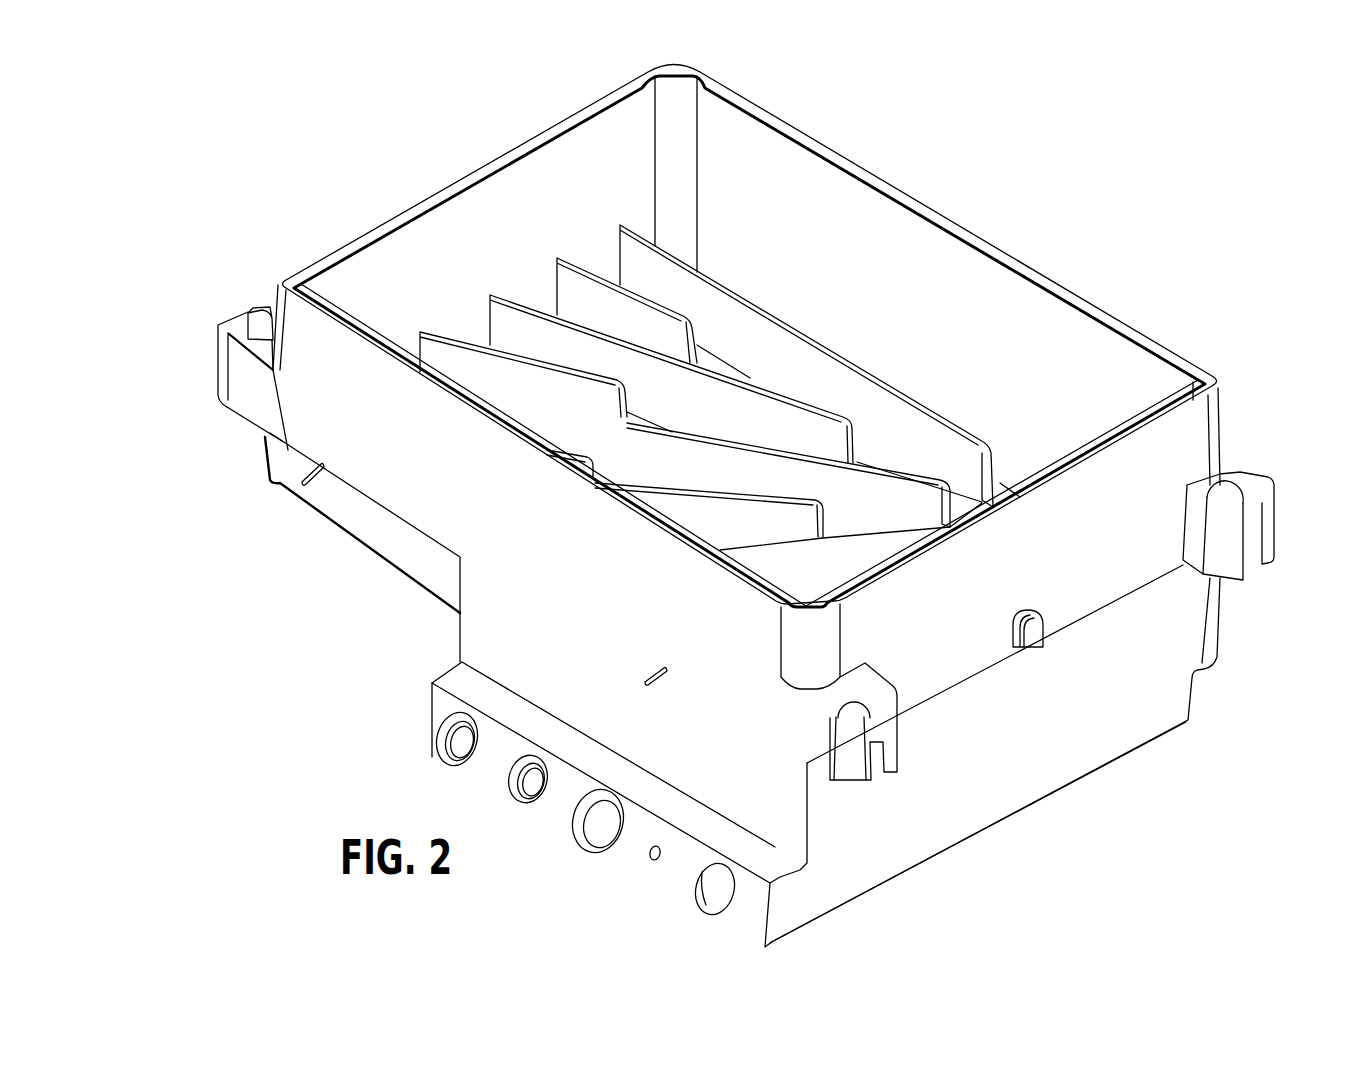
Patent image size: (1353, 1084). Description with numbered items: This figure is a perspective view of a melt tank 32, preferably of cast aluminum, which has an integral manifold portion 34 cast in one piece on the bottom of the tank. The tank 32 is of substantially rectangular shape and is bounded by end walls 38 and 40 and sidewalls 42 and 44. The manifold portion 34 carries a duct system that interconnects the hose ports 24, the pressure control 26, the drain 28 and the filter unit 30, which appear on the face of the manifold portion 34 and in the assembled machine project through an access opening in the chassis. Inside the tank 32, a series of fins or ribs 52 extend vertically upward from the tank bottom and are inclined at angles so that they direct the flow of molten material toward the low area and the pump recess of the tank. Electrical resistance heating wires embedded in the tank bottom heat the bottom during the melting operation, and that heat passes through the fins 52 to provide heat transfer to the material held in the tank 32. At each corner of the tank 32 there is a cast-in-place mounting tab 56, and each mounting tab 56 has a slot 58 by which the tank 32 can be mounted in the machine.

The hose ports 24 is at (523, 783).
The pressure control 26 is at (594, 826).
The drain 28 is at (650, 857).
The filter unit 30 is at (713, 893).
The melt tank 32 is at (1030, 259).
The manifold portion 34 is at (813, 892).
The end wall 38 is at (453, 203).
The end wall 40 is at (1167, 438).
The sidewall 42 is at (420, 478).
The sidewall 44 is at (886, 231).
The fins 52 is at (620, 248).
The mounting tab 56 is at (222, 377).
The slot 58 is at (250, 323).